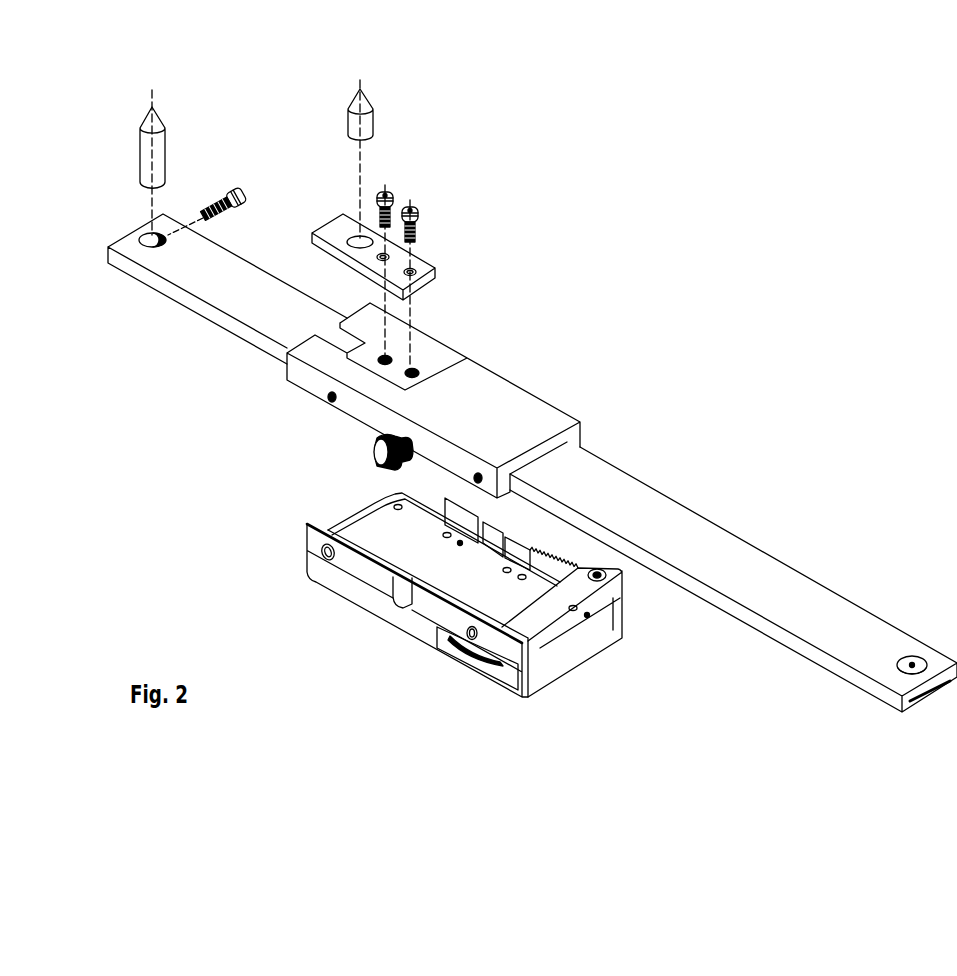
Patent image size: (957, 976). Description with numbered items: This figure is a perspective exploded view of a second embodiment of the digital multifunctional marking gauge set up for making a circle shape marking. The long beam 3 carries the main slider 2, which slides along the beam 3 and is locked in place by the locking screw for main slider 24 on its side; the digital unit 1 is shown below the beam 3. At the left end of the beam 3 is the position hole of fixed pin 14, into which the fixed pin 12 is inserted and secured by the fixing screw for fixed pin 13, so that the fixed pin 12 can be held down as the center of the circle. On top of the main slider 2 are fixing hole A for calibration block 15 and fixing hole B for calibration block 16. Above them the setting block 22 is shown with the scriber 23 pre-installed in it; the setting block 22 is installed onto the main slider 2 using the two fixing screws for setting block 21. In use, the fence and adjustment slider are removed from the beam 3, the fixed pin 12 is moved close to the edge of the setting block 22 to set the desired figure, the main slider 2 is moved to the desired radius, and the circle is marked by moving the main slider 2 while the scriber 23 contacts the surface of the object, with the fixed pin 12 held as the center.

The digital unit 1 is at (332, 577).
The main slider 2 is at (308, 386).
The beam 3 is at (212, 312).
The fixed pin 12 is at (147, 167).
The fixing screw for fixed pin 13 is at (233, 190).
The position hole of fixed pin 14 is at (147, 239).
The fixing hole A for calibration block 15 is at (392, 360).
The fixing hole B for calibration block 16 is at (419, 373).
The fixing screws for setting block 21 is at (393, 196).
The setting block 22 is at (435, 270).
The scriber 23 is at (365, 122).
The locking screw for main slider 24 is at (378, 455).